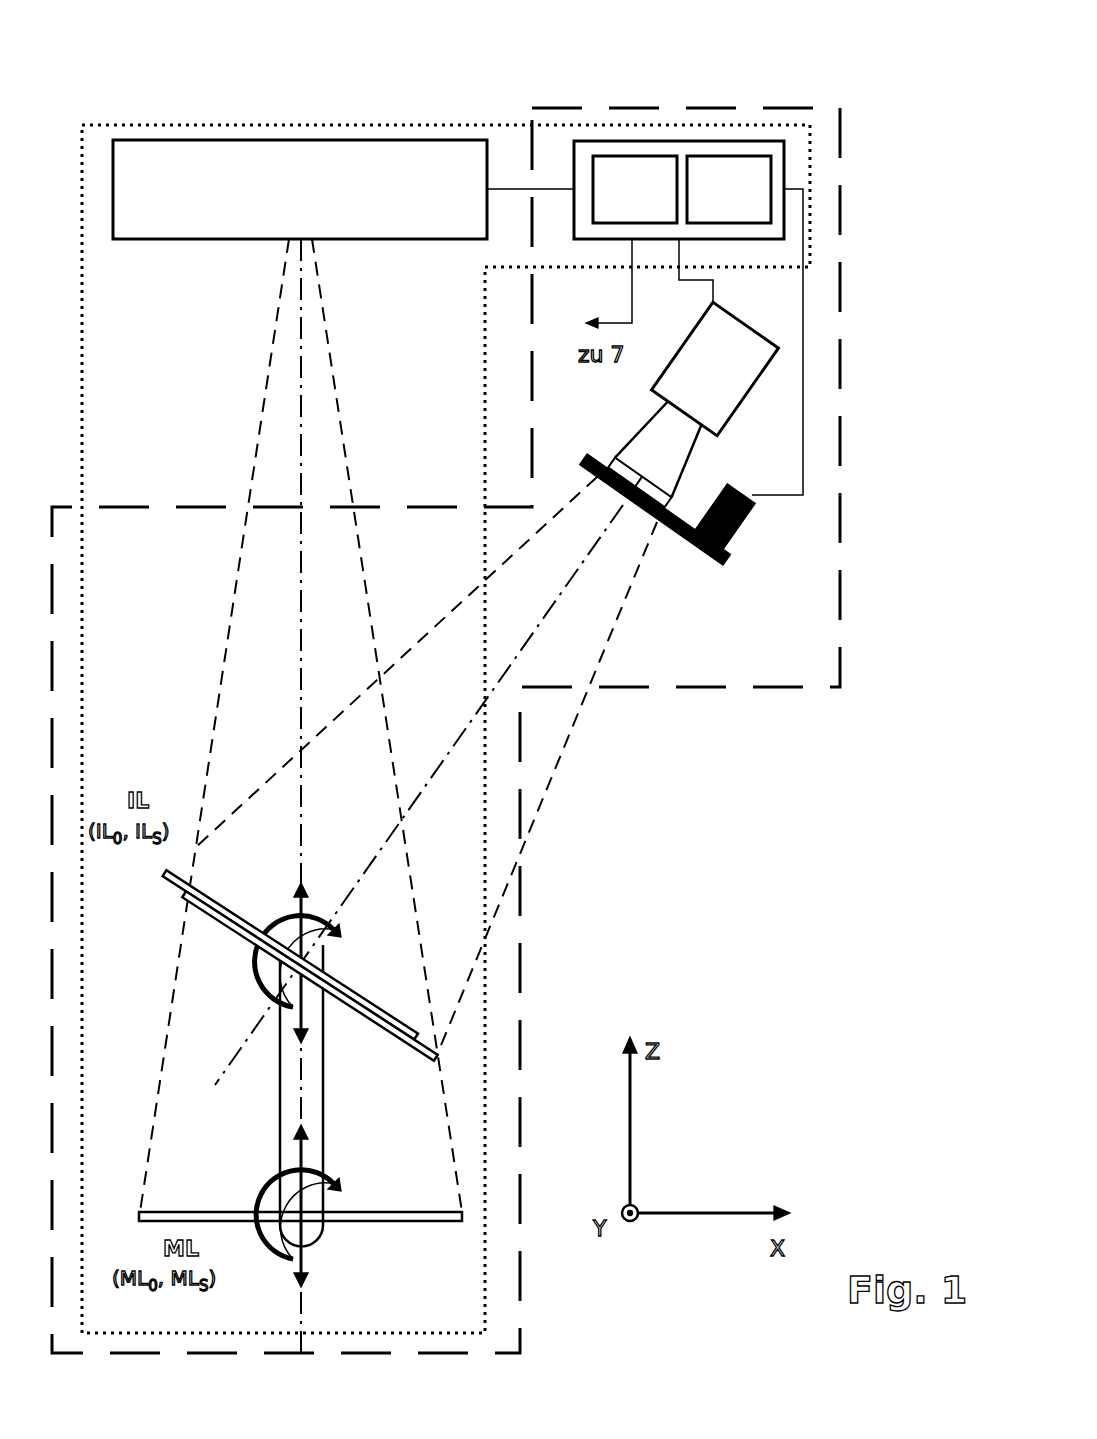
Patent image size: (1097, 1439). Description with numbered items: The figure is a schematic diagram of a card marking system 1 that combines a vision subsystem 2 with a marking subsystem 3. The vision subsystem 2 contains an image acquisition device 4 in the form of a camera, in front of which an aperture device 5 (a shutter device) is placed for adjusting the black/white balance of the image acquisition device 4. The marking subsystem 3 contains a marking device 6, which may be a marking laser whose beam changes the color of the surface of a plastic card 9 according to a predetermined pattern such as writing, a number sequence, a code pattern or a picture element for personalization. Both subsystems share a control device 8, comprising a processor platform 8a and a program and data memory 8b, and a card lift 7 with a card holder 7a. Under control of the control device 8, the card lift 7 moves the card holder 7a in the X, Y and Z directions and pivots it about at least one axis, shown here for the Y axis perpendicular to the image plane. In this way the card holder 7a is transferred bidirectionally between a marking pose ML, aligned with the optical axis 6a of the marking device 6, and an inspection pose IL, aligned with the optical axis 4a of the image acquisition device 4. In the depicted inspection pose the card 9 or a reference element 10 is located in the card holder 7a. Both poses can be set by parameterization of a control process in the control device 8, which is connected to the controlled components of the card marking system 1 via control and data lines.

The card marking system 1 is at (446, 676).
The vision subsystem 2 is at (638, 108).
The marking subsystem 3 is at (248, 125).
The image acquisition device 4 is at (723, 386).
The optical axis of the image acquisition device 4a is at (426, 781).
The aperture device 5 is at (757, 518).
The marking device 6 is at (308, 208).
The optical axis of the marking device 6a is at (301, 797).
The card lift 7 is at (323, 1077).
The card holder 7a is at (218, 1212).
The control device 8 is at (679, 136).
The processor platform 8a is at (648, 204).
The program and data memory 8b is at (742, 204).
The plastic card 9 is at (352, 982).
The reference element 10 is at (442, 965).